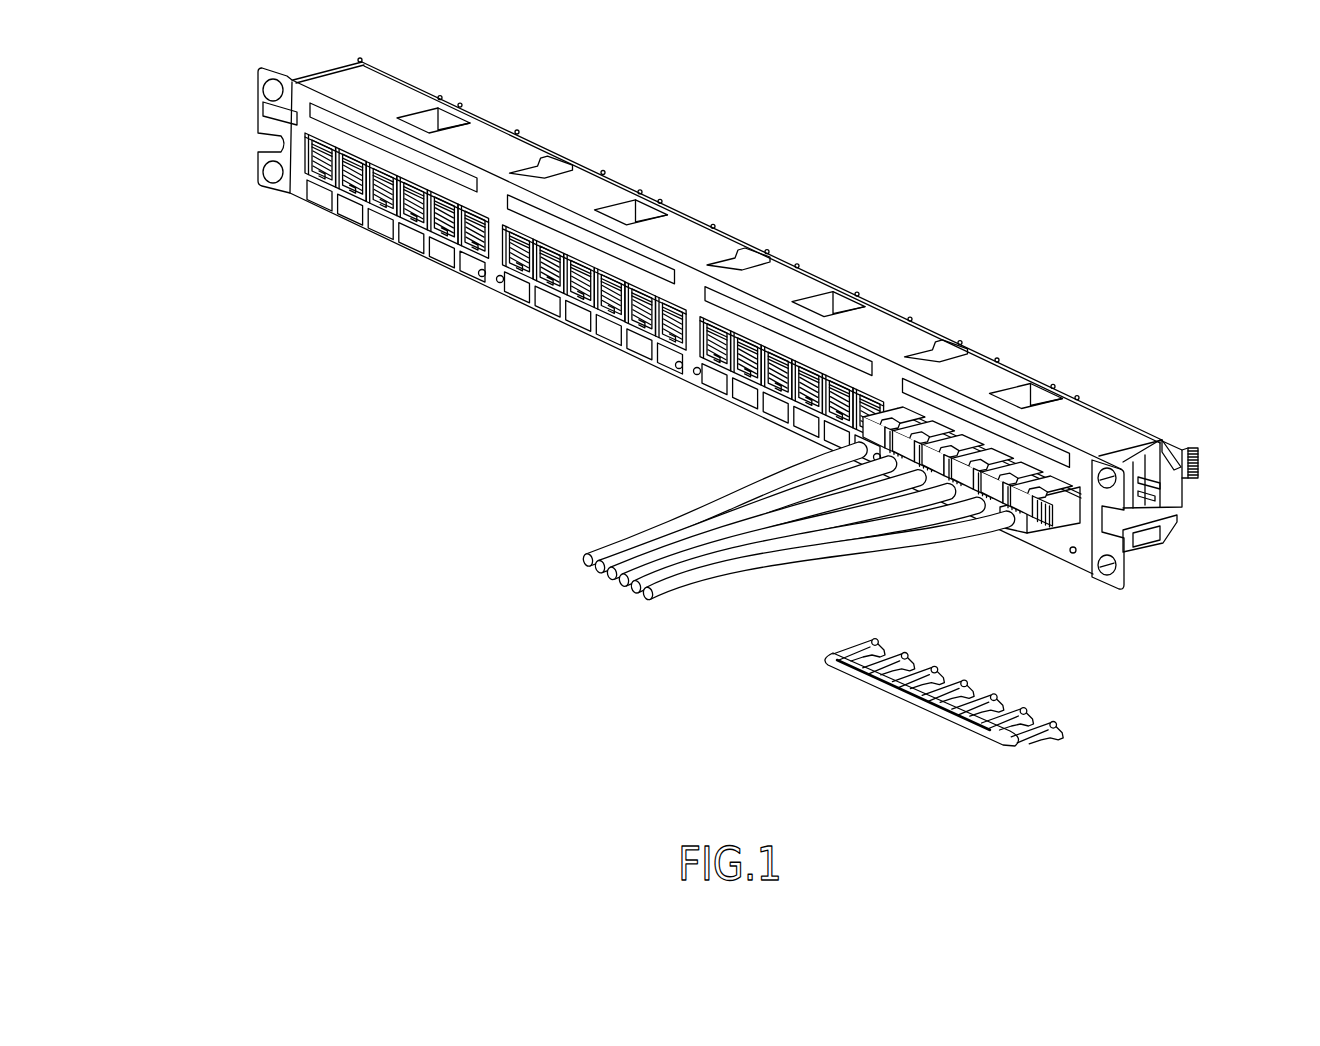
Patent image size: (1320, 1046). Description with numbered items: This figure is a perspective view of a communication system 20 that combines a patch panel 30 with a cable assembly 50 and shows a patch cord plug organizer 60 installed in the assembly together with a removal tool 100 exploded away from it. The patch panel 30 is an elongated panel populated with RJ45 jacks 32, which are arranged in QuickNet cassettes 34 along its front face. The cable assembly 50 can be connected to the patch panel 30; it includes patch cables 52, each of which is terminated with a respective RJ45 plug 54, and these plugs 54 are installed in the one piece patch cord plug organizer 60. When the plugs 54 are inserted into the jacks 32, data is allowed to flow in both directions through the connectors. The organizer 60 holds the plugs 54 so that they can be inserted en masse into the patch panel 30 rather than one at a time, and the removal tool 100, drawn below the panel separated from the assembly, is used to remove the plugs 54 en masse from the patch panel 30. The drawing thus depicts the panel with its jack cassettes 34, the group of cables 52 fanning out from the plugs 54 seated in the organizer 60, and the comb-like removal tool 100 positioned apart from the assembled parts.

The communication system 20 is at (283, 310).
The patch panel 30 is at (795, 282).
The RJ45 jacks 32 is at (587, 293).
The QuickNet cassettes 34 is at (1173, 448).
The cable assembly 50 is at (794, 504).
The patch cables 52 is at (740, 490).
The RJ45 plugs 54 is at (853, 442).
The patch cord plug organizer 60 is at (1058, 515).
The removal tool 100 is at (865, 720).